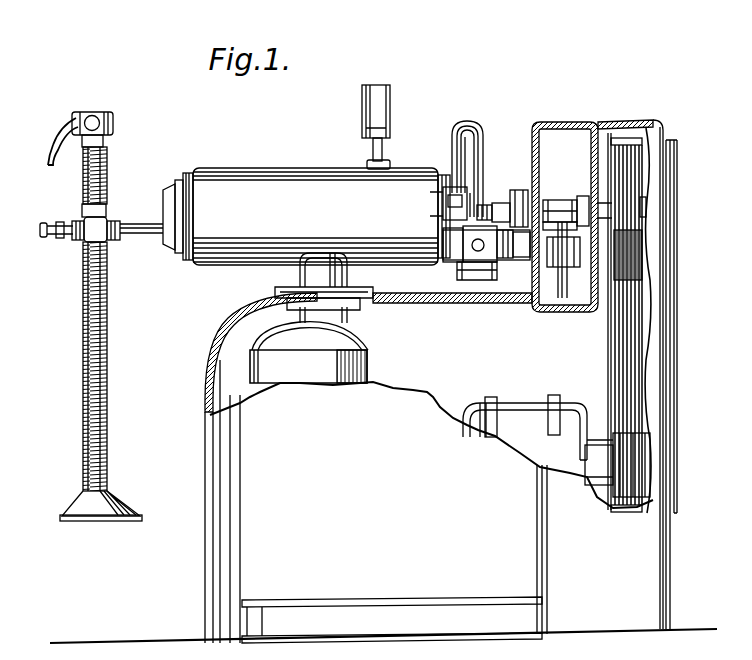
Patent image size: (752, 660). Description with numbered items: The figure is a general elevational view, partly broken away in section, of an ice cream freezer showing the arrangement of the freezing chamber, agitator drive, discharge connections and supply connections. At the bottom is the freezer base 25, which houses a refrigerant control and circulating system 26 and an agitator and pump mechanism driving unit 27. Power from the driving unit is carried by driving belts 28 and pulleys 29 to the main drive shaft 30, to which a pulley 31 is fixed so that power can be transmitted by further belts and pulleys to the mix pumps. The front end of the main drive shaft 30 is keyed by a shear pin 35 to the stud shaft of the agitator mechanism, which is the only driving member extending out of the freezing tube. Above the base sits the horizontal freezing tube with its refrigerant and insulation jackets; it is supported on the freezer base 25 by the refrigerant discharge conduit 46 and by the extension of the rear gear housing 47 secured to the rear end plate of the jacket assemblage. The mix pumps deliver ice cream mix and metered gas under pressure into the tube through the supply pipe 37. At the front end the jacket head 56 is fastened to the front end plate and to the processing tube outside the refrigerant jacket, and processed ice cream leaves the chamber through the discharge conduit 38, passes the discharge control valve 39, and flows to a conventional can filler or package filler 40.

The freezer base 25 is at (256, 558).
The refrigerant control and circulating system 26 is at (360, 360).
The agitator and pump mechanism driving unit 27 is at (510, 405).
The driving belts 28 is at (620, 365).
The pulleys 29 is at (600, 300).
The main drive shaft 30 is at (501, 207).
The pulley 31 is at (566, 200).
The shear pin 35 is at (497, 206).
The supply pipe 37 is at (481, 148).
The discharge conduit 38 is at (133, 225).
The discharge control valve 39 is at (88, 240).
The can filler or package filler 40 is at (88, 387).
The refrigerant discharge conduit 46 is at (300, 280).
The rear gear housing 47 is at (449, 263).
The jacket head 56 is at (193, 172).